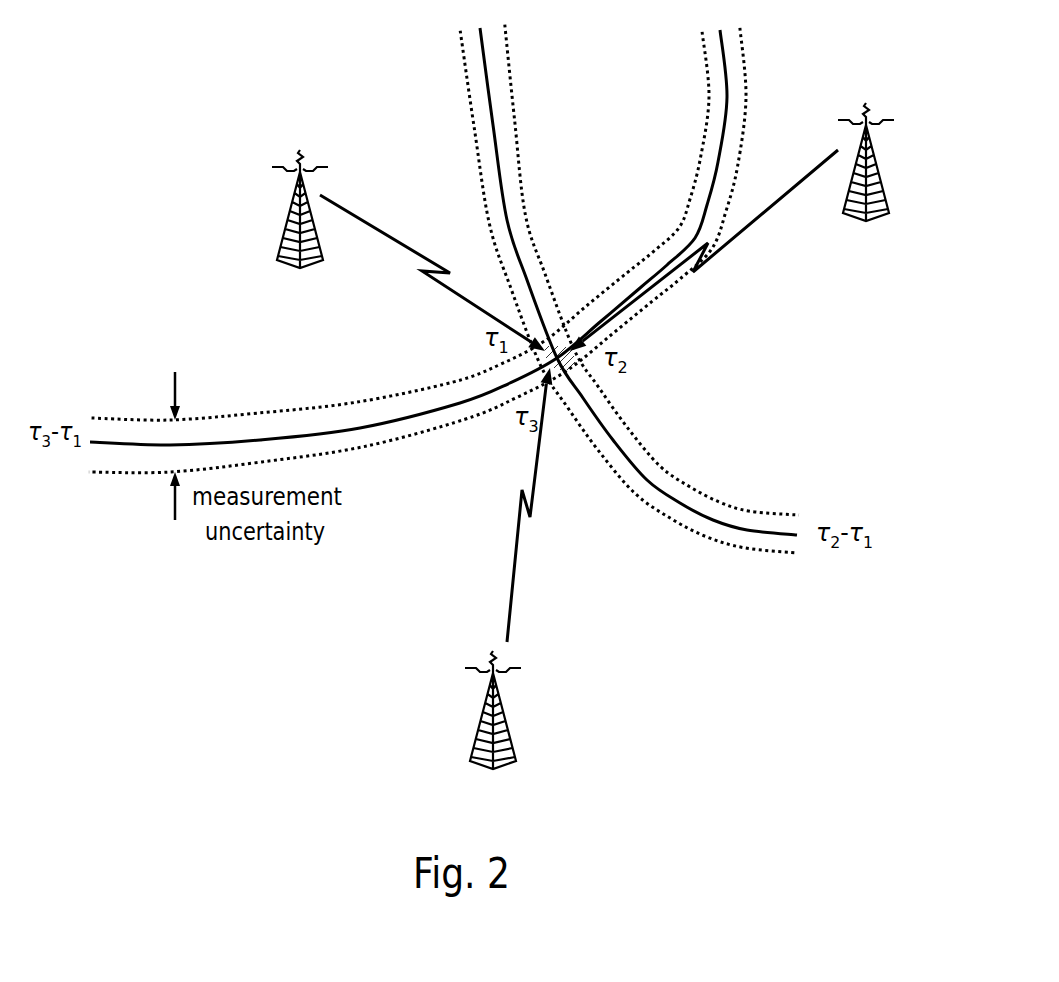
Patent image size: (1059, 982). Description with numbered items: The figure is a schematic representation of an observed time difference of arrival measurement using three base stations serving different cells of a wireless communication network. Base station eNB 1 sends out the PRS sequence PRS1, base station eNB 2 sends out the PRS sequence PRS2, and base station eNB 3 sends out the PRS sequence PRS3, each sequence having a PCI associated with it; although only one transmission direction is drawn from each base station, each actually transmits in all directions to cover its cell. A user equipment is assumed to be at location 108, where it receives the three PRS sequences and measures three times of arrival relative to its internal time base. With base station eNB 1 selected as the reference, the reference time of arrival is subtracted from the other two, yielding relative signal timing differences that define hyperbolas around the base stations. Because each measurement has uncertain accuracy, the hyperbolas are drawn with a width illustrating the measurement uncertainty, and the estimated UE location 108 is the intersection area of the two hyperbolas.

The location of the user equipment 108 is at (560, 363).
The base station eNB1 1 is at (305, 230).
The base station eNB2 2 is at (871, 183).
The base station eNB3 3 is at (498, 730).
The PRS sequence PRS1 is at (432, 273).
The PRS sequence PRS2 is at (704, 250).
The PRS sequence PRS3 is at (545, 505).